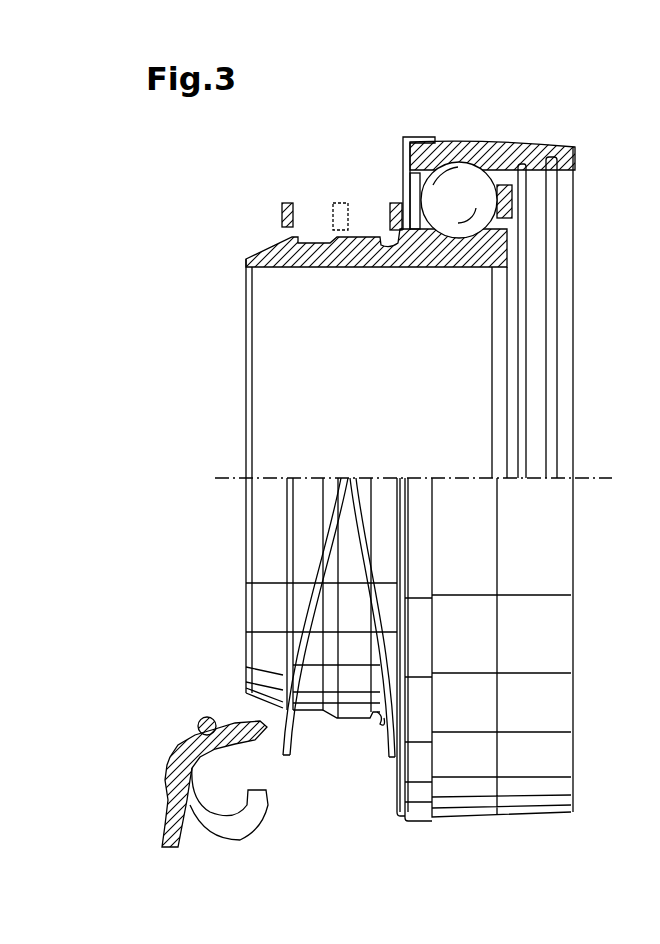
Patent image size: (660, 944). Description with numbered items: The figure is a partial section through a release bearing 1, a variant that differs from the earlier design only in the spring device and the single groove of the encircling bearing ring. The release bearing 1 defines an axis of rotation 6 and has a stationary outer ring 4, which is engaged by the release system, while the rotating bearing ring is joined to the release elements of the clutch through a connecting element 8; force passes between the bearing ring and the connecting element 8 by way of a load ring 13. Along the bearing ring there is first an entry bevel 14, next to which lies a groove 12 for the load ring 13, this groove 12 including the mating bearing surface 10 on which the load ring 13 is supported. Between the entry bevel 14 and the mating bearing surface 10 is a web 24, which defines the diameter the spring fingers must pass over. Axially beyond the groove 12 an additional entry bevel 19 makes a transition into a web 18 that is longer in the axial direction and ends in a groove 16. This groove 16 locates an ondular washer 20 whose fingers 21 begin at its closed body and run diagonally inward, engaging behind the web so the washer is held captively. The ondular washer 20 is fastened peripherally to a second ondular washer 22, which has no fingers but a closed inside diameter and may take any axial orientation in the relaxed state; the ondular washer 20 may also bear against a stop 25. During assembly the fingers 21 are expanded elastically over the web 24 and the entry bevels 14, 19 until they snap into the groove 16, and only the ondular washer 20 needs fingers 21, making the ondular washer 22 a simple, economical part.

The release bearing 1 is at (507, 124).
The outer ring 4 is at (575, 147).
The axis of rotation 6 is at (598, 475).
The connecting element 8 is at (172, 775).
The mating bearing surface 10 is at (302, 722).
The groove 12 is at (318, 722).
The load ring 13 is at (200, 719).
The entry bevel 14 is at (260, 243).
The groove 16 is at (377, 228).
The web 18 is at (355, 727).
The entry bevel 19 is at (328, 233).
The ondular washer 20 is at (388, 203).
The fingers 21 is at (385, 228).
The ondular washer 22 is at (283, 205).
The web 24 is at (302, 228).
The stop 25 is at (404, 140).